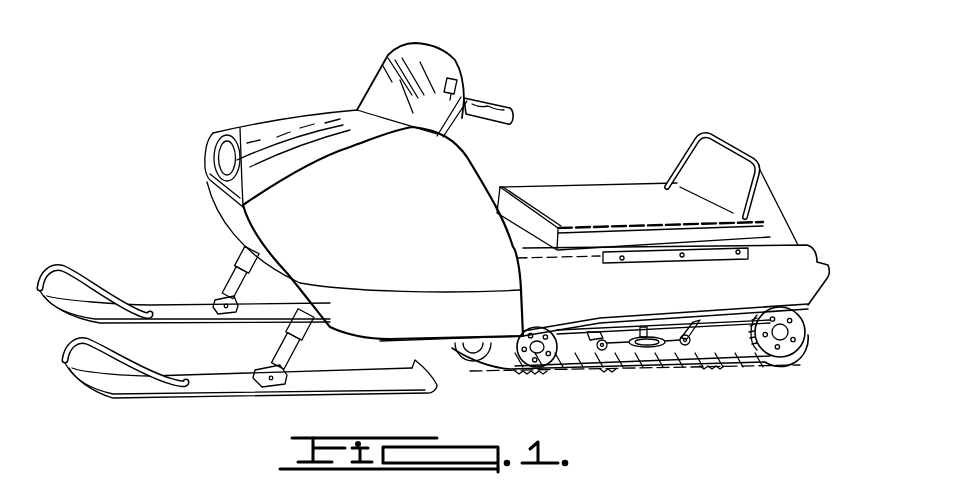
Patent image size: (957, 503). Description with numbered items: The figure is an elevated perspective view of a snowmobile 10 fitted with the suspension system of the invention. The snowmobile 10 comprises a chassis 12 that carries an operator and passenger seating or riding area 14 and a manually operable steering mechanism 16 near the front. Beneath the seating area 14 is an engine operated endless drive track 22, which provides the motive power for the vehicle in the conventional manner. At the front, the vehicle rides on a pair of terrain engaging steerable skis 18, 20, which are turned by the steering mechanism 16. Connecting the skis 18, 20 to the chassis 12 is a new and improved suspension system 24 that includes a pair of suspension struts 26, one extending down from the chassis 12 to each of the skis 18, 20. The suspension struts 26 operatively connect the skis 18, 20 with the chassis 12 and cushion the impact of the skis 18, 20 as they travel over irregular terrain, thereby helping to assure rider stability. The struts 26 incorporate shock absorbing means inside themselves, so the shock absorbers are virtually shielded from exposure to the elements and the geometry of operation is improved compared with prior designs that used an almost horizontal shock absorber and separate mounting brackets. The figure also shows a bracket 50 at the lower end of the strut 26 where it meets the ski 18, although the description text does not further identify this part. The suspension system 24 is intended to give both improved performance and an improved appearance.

The snowmobile 10 is at (607, 92).
The chassis 12 is at (800, 243).
The operator and passenger seating or riding area 14 is at (598, 193).
The manually operable steering mechanism 16 is at (487, 100).
The terrain engaging steerable ski 18 is at (216, 377).
The terrain engaging steerable ski 20 is at (163, 306).
The engine operated endless drive track 22 is at (617, 367).
The suspension system 24 is at (240, 250).
The suspension strut 26 is at (227, 282).
The ski bracket 50 is at (280, 385).